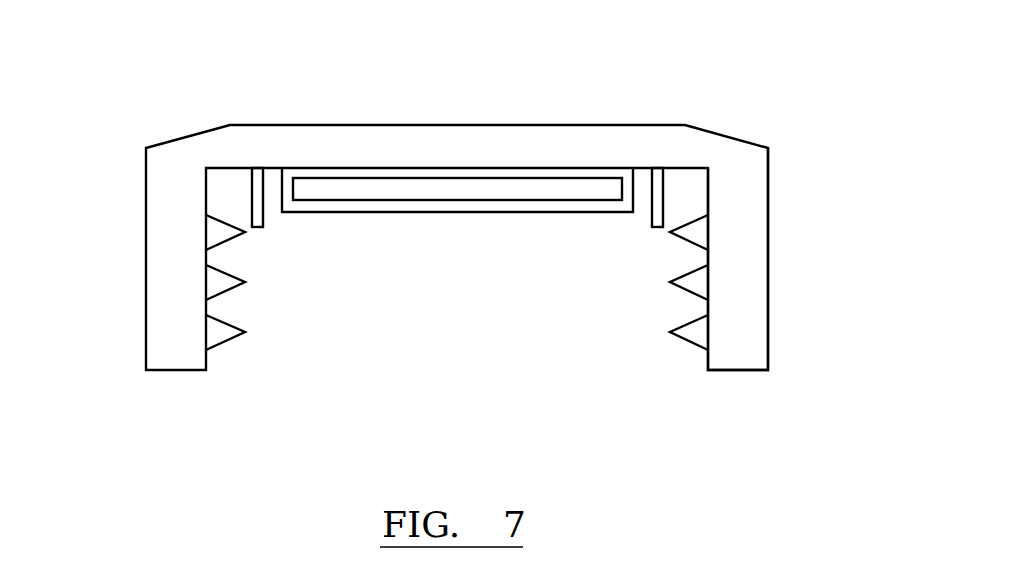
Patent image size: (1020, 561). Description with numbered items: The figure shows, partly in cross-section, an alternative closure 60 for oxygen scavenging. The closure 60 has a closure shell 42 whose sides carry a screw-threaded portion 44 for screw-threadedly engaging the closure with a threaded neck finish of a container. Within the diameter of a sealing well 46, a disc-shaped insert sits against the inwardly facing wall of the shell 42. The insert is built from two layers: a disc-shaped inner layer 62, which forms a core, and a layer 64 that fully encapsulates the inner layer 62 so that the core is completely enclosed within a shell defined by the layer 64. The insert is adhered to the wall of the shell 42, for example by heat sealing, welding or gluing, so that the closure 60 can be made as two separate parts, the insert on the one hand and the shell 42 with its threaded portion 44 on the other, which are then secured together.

The closure 60 is at (816, 59).
The closure shell 42 is at (742, 247).
The screw-threaded portion 44 is at (231, 170).
The sealing well 46 is at (665, 195).
The inner layer 62 is at (343, 213).
The layer 64 is at (492, 173).